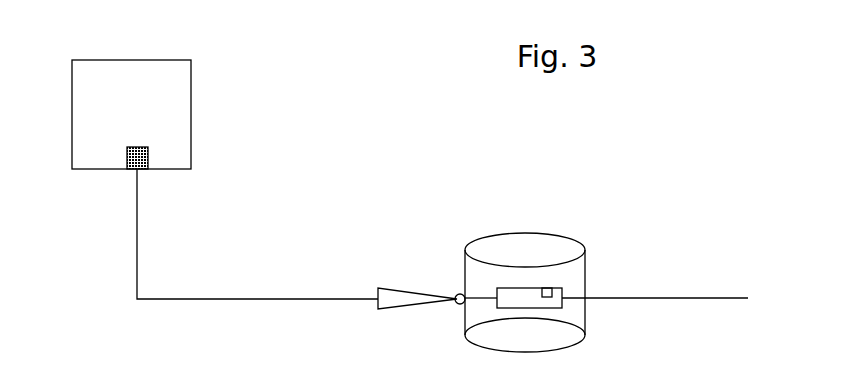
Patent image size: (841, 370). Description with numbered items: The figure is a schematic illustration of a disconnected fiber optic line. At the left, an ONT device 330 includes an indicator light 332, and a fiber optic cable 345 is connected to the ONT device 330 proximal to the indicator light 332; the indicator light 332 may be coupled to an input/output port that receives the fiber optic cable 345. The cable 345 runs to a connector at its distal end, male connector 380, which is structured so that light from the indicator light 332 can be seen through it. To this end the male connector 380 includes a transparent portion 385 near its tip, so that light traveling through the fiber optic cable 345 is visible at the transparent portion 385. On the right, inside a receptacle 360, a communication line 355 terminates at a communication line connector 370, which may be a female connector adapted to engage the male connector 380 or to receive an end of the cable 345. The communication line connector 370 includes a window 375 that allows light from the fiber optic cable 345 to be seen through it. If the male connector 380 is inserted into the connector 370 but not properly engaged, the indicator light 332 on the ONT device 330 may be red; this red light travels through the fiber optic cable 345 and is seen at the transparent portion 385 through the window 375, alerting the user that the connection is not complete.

The ONT device 330 is at (131, 114).
The indicator light 332 is at (124, 168).
The fiber optic cable 345 is at (229, 299).
The communication line 355 is at (728, 297).
The receptacle 360 is at (572, 236).
The communication line connector 370 is at (557, 308).
The window 375 is at (546, 288).
The male connector 380 is at (415, 307).
The transparent portion 385 is at (457, 294).